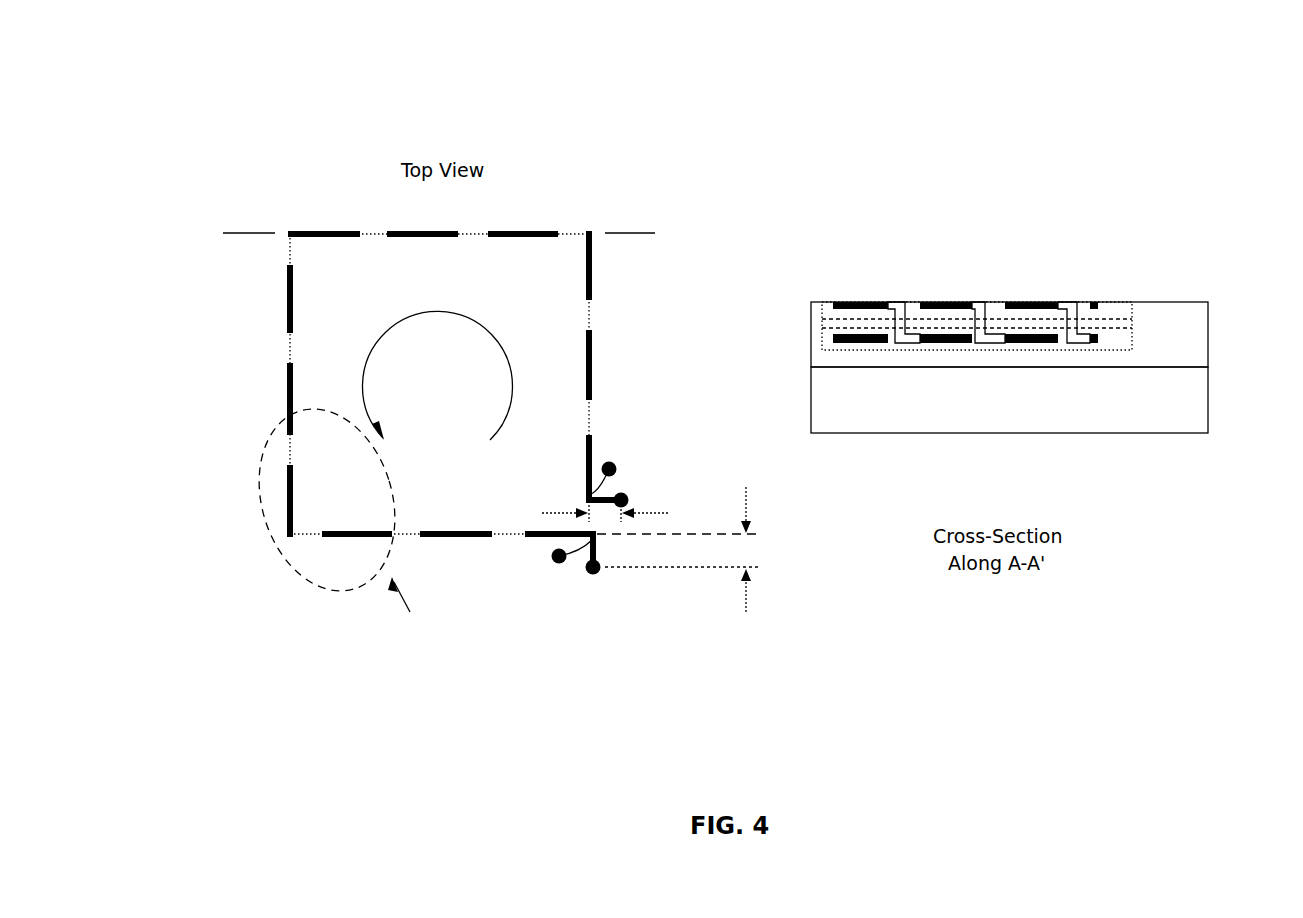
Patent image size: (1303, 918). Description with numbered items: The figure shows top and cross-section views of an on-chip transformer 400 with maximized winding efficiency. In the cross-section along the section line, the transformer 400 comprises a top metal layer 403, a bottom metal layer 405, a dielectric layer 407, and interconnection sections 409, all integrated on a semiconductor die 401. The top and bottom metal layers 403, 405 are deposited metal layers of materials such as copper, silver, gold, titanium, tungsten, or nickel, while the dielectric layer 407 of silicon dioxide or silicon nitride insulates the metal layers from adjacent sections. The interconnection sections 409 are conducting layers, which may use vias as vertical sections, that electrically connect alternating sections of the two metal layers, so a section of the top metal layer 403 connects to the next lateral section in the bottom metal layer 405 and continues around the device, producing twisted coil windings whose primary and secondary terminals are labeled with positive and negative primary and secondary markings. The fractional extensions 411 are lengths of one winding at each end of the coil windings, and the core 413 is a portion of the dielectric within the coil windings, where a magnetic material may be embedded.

The transformer 400 is at (302, 85).
The semiconductor die 401 is at (1009, 400).
The top metal layer 403 is at (590, 366).
The bottom metal layer 405 is at (1133, 337).
The dielectric layer 407 is at (1009, 334).
The interconnection sections 409 is at (1070, 315).
The fractional extensions 411 is at (653, 537).
The core 413 is at (439, 384).